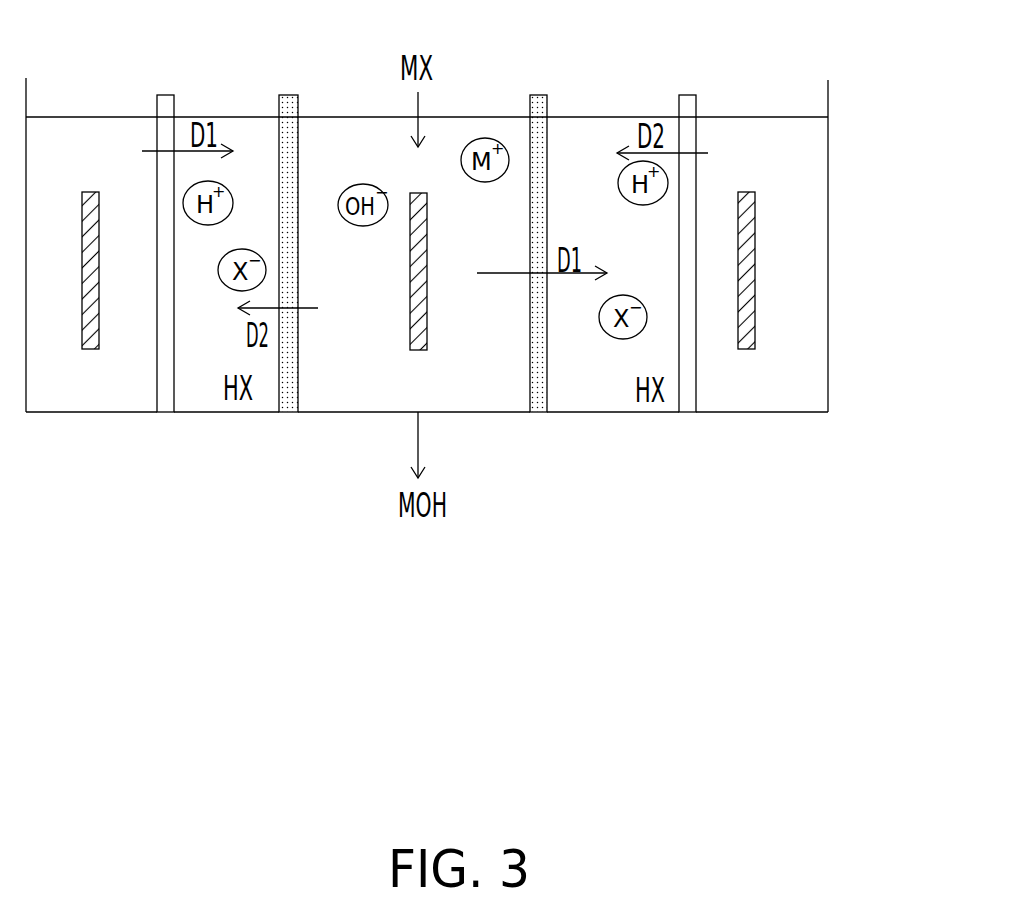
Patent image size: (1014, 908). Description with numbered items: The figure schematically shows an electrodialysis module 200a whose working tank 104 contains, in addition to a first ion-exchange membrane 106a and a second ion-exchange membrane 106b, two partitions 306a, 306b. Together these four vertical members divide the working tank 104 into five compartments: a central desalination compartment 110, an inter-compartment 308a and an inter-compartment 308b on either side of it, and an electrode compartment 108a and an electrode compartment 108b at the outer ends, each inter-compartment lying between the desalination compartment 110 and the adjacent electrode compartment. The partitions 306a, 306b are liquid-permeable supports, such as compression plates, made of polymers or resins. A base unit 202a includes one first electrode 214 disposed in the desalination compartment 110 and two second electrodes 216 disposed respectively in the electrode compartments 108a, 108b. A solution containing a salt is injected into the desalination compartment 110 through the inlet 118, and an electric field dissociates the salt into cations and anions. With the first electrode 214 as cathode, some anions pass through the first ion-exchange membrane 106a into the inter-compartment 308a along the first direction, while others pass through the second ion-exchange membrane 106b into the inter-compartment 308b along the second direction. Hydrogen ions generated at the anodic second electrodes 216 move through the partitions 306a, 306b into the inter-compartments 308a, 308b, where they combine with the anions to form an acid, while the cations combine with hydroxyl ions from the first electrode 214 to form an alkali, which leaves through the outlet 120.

The working tank 104 is at (828, 290).
The first ion-exchange membrane 106a is at (540, 95).
The second ion-exchange membrane 106b is at (288, 95).
The electrode compartment 108a is at (760, 395).
The electrode compartment 108b is at (83, 398).
The desalination compartment 110 is at (342, 400).
The inlet 118 is at (422, 108).
The outlet 120 is at (422, 437).
The electrodialysis module 200a is at (848, 93).
The base unit 202a is at (884, 621).
The first electrode 214 is at (423, 335).
The second electrode 216 is at (92, 308).
The partition 306a is at (686, 95).
The partition 306b is at (165, 95).
The inter-compartment 308a is at (607, 395).
The inter-compartment 308b is at (212, 398).